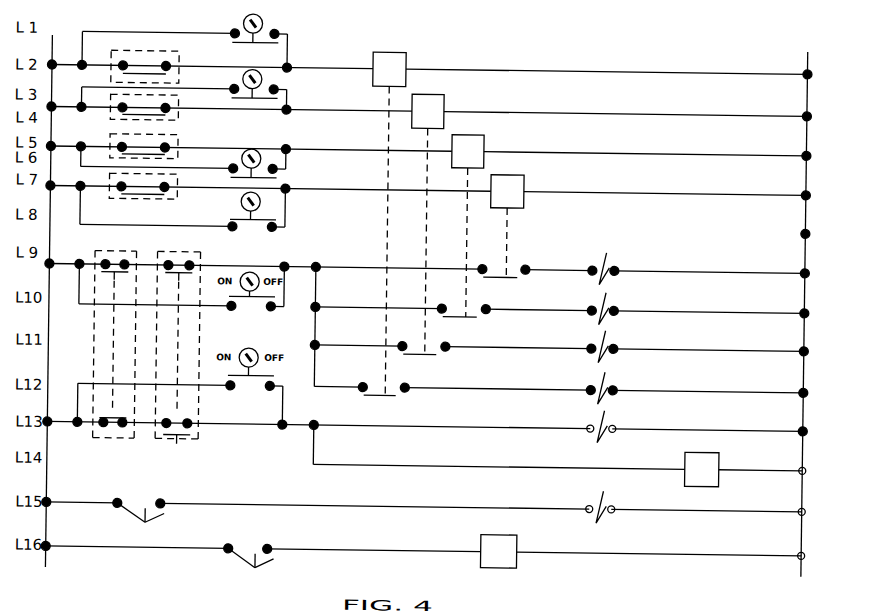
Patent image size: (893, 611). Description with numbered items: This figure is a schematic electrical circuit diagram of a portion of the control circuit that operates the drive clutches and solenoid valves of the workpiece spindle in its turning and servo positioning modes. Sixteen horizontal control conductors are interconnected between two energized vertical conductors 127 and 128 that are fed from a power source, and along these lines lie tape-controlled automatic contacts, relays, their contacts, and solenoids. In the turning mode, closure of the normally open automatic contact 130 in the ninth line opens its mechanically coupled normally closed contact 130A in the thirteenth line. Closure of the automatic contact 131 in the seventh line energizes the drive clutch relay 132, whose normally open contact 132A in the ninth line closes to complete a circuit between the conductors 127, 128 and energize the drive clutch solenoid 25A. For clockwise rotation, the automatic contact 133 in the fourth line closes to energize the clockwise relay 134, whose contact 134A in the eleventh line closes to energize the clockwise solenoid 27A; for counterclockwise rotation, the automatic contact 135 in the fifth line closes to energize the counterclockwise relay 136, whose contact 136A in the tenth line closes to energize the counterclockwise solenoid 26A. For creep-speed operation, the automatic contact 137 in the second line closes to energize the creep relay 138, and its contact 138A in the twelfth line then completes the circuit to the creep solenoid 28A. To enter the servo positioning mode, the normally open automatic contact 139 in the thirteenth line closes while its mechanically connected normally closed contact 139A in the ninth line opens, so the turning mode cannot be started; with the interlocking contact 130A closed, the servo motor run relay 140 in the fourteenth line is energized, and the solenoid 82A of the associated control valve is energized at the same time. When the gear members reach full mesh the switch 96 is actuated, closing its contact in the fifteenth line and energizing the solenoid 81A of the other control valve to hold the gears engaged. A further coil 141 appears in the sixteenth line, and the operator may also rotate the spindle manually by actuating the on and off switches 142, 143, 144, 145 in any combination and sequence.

The energized vertical conductor 127 is at (54, 534).
The energized vertical conductor 128 is at (806, 104).
The on and off switch 142 is at (205, 40).
The on and off switch 143 is at (288, 113).
The on and off switch 144 is at (284, 176).
The on and off switch 145 is at (284, 229).
The normally open automatic contact 137 is at (149, 73).
The normally open automatic contact 133 is at (165, 114).
The normally open automatic contact 135 is at (165, 152).
The normally open automatic contact 131 is at (146, 193).
The creep relay 138 is at (403, 67).
The clockwise relay 134 is at (440, 110).
The counterclockwise relay 136 is at (480, 152).
The drive clutch relay 132 is at (520, 192).
The servo motor run relay 140 is at (706, 470).
The relay coil 141 is at (502, 548).
The normally open contact 132A is at (506, 272).
The contact 136A is at (460, 312).
The normally open contact 134A is at (438, 350).
The contact 138A is at (394, 391).
The normally open automatic contact 130 is at (118, 254).
The normally closed contact 139A is at (176, 256).
The normally closed contact 130A is at (120, 421).
The normally open automatic contact 139 is at (182, 442).
The drive clutch solenoid 25A is at (611, 258).
The counterclockwise solenoid 26A is at (611, 298).
The clockwise solenoid 27A is at (611, 336).
The creep solenoid 28A is at (611, 377).
The solenoid 82A is at (612, 415).
The solenoid 81A is at (612, 495).
The switch 96 is at (124, 501).